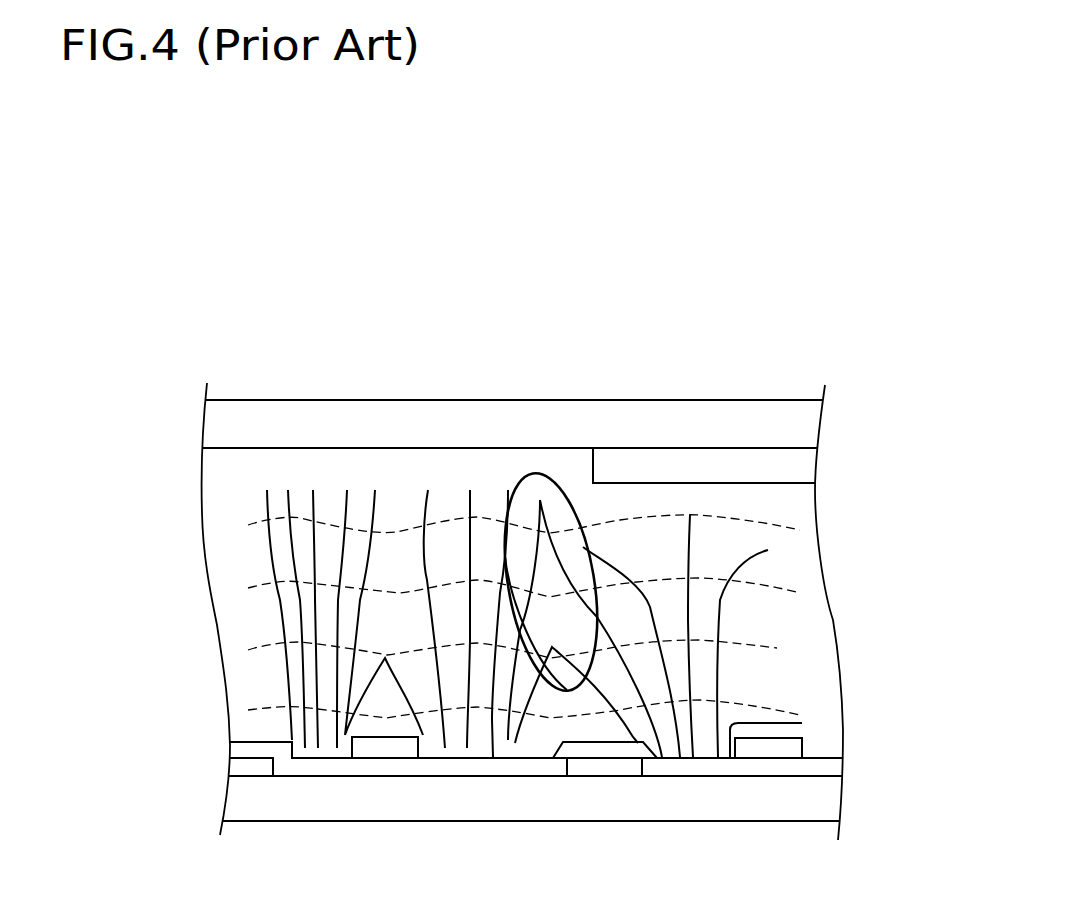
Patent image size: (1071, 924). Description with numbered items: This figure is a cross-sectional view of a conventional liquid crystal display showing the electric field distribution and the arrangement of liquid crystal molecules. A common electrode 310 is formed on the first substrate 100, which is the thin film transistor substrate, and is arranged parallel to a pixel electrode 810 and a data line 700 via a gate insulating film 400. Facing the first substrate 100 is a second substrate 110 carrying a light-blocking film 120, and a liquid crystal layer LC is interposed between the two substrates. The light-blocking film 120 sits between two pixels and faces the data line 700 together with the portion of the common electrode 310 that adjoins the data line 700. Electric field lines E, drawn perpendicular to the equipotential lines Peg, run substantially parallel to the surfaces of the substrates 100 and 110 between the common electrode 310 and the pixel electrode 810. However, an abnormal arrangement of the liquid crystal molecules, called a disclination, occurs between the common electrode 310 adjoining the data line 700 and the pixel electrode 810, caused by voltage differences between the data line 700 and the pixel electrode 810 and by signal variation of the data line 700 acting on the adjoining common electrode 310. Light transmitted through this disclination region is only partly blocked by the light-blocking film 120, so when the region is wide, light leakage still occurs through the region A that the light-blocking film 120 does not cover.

The second substrate 110 is at (805, 425).
The light-blocking film 120 is at (805, 470).
The first substrate 100 is at (828, 807).
The gate insulating film 400 is at (830, 770).
The pixel electrode 810 is at (383, 750).
The common electrode 310 is at (603, 768).
The data line 700 is at (765, 752).
The equipotential lines Peg is at (775, 720).
The electric field lines E is at (780, 652).
The liquid crystal layer LC is at (230, 612).
The region A is at (533, 470).